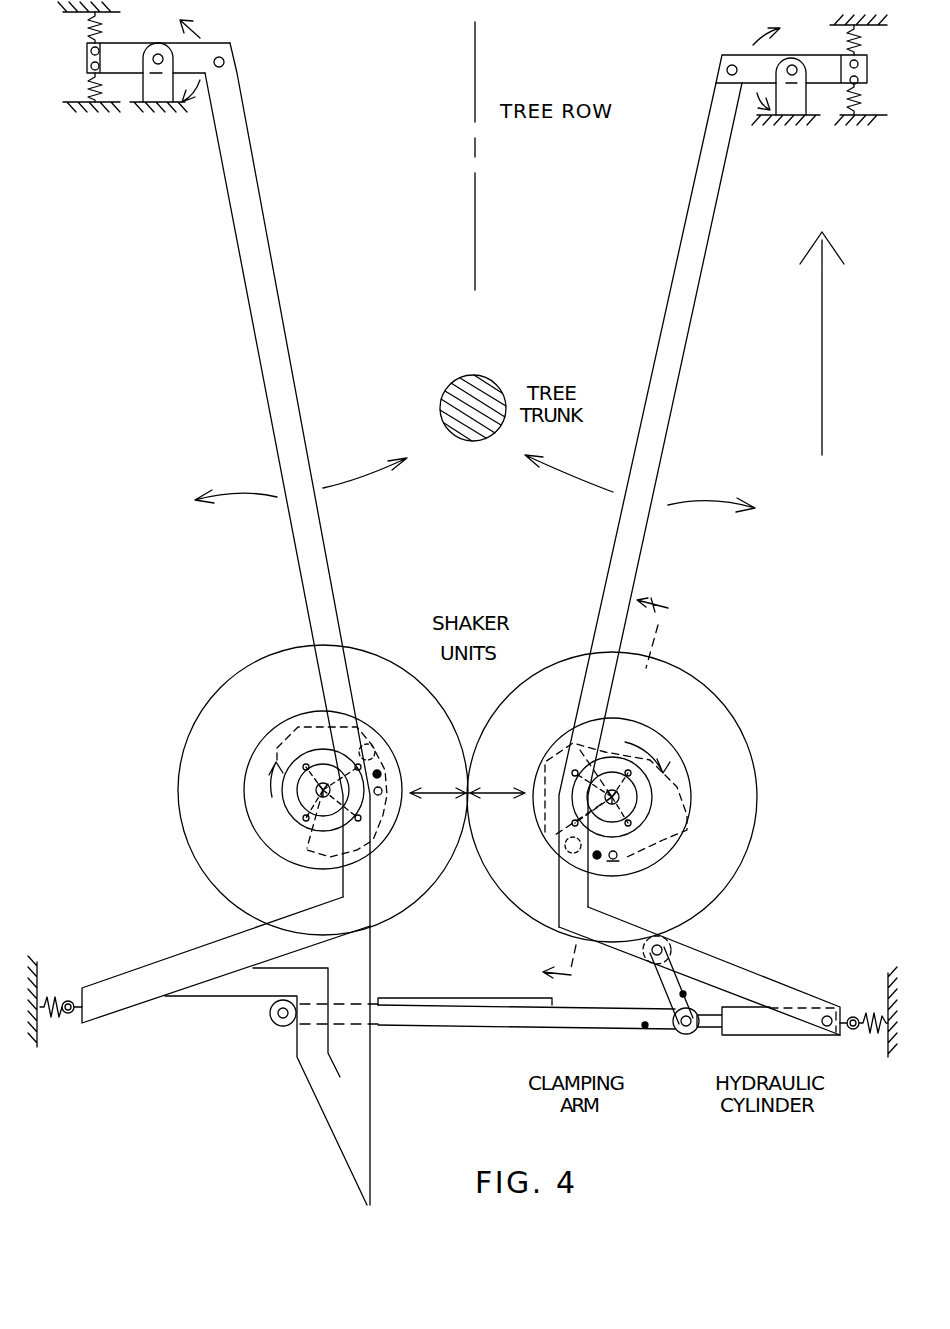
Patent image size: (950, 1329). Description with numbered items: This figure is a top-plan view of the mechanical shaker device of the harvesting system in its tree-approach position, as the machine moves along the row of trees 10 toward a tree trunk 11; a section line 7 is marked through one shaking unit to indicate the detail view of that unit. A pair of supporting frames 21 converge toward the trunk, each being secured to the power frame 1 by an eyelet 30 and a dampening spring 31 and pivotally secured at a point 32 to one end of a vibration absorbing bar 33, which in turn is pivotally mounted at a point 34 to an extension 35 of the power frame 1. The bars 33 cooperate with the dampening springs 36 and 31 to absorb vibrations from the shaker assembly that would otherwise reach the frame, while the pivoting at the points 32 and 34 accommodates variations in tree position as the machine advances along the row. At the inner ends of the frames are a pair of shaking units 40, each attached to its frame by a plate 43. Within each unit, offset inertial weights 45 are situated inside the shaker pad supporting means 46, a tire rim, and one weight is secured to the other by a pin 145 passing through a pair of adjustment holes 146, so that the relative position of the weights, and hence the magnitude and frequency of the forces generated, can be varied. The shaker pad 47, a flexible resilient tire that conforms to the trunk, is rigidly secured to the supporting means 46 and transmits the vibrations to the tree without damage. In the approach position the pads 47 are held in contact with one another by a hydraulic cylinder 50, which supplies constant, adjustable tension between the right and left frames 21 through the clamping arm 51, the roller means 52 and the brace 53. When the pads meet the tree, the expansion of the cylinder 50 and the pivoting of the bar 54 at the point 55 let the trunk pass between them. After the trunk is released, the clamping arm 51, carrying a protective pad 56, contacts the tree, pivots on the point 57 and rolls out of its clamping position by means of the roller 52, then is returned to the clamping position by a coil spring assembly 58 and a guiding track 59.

The power frame 1 is at (852, 134).
The section line 7- 7 is at (612, 793).
The row of trees 10 is at (479, 148).
The tree trunk 11 is at (487, 381).
The supporting frame 21 is at (322, 538).
The eyelet 30 is at (853, 1017).
The dampening spring 31 is at (873, 1033).
The pivot point 32 is at (733, 64).
The vibration absorbing bar 33 is at (817, 67).
The pivot point 34 is at (793, 64).
The extension 35 is at (802, 100).
The dampening spring 36 is at (862, 95).
The shaking unit 40 is at (467, 793).
The plate 43 is at (318, 846).
The offset inertial weight 45 is at (603, 787).
The shaker pad supporting means 46 is at (686, 817).
The shaker pad 47 is at (430, 865).
The hydraulic cylinder 50 is at (768, 1030).
The clamping arm 51 is at (558, 1020).
The roller means 52 is at (270, 1016).
The brace 53 is at (307, 1042).
The bar 54 is at (666, 978).
The pivot point 55 is at (665, 948).
The pad 56 is at (470, 1003).
The pivot point 57 is at (690, 1033).
The coil spring assembly 58 is at (648, 1025).
The guiding track 59 is at (336, 1107).
The pin 145 is at (379, 774).
The adjustment hole 146 is at (384, 789).